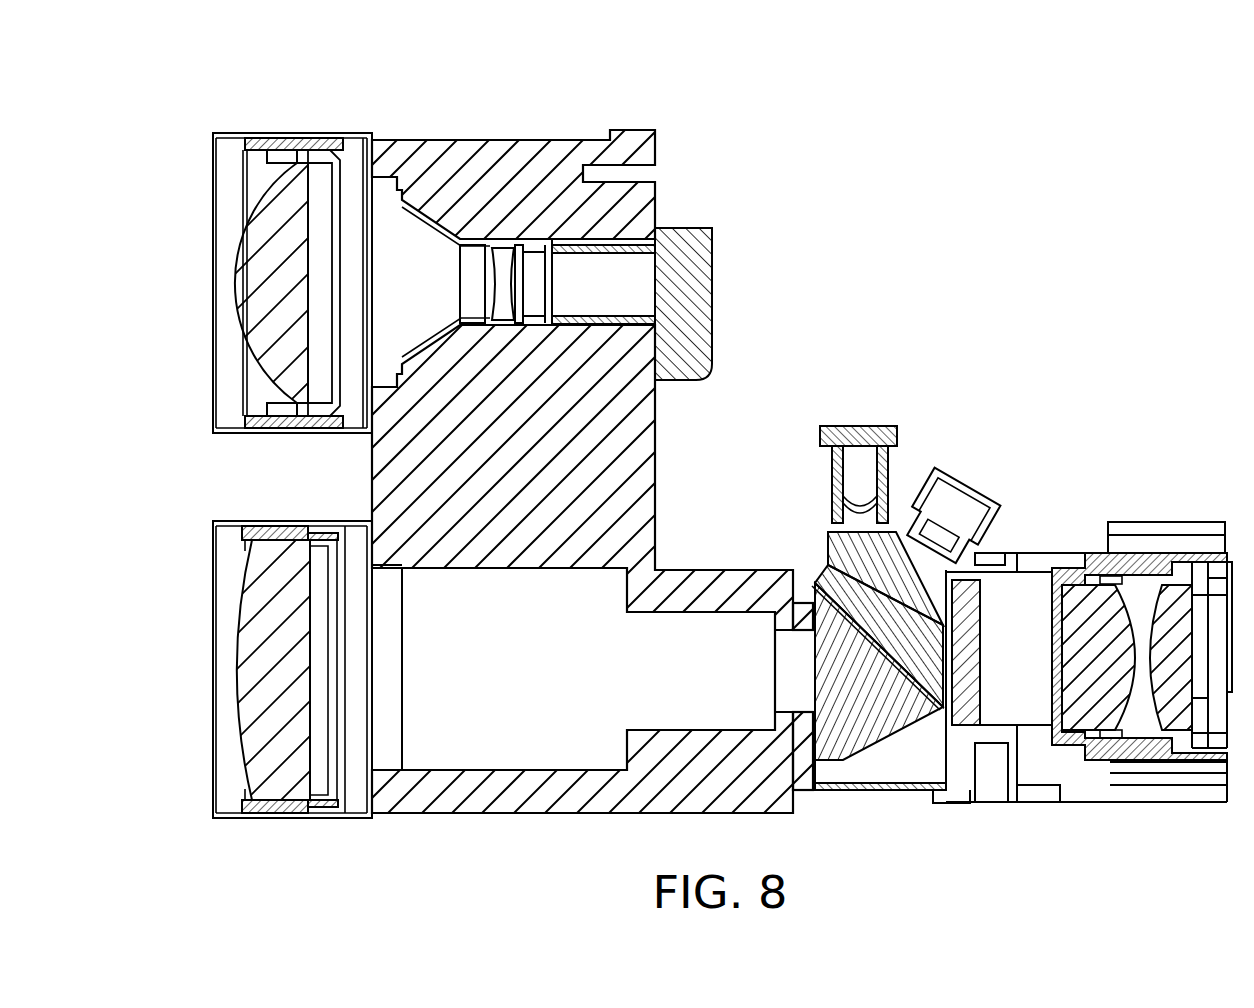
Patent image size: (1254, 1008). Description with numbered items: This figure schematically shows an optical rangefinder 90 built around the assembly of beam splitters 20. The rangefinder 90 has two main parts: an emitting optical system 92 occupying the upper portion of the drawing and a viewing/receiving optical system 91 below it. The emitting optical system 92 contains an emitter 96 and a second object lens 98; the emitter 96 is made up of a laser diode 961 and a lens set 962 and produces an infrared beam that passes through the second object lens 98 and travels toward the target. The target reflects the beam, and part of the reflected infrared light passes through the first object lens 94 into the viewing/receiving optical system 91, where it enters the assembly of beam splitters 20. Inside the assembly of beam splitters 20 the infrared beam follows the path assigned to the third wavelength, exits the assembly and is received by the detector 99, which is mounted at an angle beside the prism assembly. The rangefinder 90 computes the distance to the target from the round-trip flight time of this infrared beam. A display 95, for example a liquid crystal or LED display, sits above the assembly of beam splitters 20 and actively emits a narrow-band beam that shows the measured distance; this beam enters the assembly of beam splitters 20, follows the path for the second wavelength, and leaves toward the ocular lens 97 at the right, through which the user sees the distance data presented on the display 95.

The optical rangefinder 90 is at (188, 74).
The emitting optical system 92 is at (431, 126).
The viewing/receiving optical system 91 is at (596, 818).
The emitter 96 is at (587, 196).
The laser diode 961 is at (687, 236).
The lens set 962 is at (502, 193).
The second object lens 98 is at (247, 287).
The first object lens 94 is at (283, 793).
The display 95 is at (857, 425).
The detector 99 is at (962, 494).
The assembly of beam splitters 20 is at (895, 742).
The ocular lens 97 is at (1182, 720).